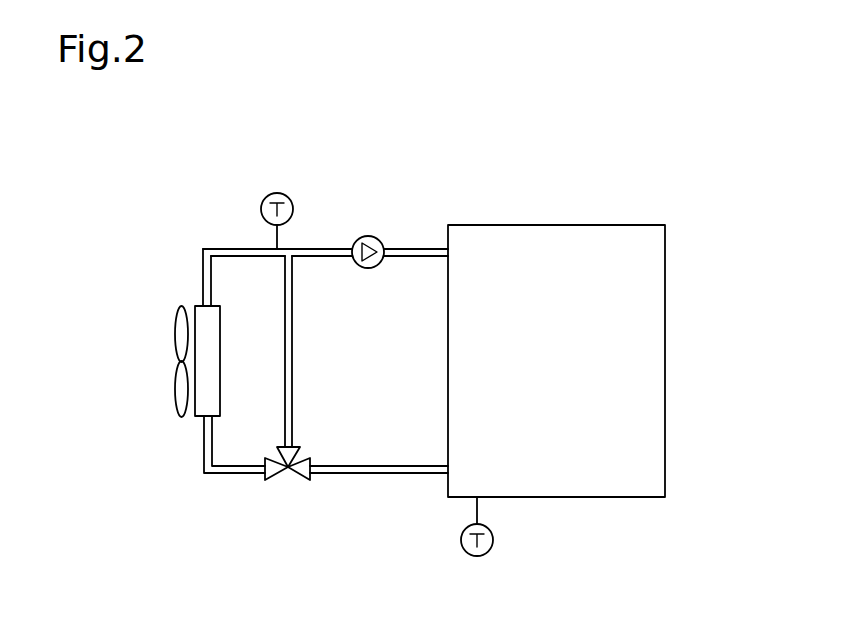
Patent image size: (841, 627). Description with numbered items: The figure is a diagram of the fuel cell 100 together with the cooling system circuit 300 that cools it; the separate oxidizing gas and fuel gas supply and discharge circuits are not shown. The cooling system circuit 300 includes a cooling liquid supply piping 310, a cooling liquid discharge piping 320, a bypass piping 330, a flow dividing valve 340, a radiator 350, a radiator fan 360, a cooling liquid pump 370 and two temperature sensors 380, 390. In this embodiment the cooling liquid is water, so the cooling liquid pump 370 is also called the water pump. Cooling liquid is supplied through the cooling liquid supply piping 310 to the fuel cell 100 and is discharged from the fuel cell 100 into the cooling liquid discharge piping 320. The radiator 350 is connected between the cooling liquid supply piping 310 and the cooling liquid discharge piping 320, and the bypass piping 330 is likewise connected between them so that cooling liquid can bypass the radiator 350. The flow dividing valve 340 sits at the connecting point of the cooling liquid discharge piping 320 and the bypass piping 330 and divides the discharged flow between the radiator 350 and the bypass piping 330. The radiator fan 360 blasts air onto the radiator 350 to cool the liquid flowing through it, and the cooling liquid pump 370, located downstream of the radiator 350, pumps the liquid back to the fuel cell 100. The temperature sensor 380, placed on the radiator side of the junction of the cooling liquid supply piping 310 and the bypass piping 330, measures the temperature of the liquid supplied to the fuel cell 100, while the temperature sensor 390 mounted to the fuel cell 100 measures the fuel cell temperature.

The fuel cell 100 is at (637, 225).
The cooling system circuit 300 is at (449, 143).
The cooling liquid supply piping 310 is at (412, 249).
The cooling liquid discharge piping 320 is at (330, 475).
The bypass piping 330 is at (293, 345).
The flow dividing valve 340 is at (305, 458).
The radiator 350 is at (220, 357).
The radiator fan 360 is at (174, 336).
The cooling liquid pump 370 is at (375, 236).
The temperature sensor 380 is at (277, 193).
The temperature sensor 390 is at (493, 540).